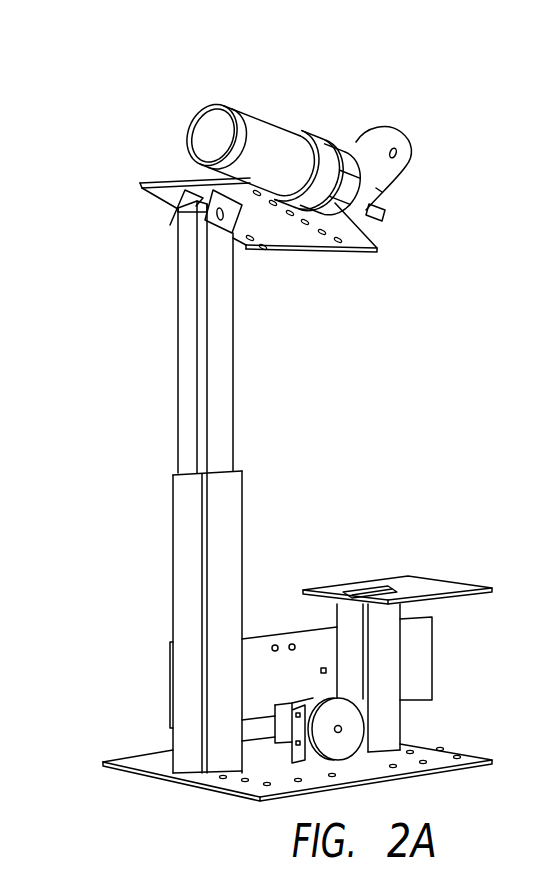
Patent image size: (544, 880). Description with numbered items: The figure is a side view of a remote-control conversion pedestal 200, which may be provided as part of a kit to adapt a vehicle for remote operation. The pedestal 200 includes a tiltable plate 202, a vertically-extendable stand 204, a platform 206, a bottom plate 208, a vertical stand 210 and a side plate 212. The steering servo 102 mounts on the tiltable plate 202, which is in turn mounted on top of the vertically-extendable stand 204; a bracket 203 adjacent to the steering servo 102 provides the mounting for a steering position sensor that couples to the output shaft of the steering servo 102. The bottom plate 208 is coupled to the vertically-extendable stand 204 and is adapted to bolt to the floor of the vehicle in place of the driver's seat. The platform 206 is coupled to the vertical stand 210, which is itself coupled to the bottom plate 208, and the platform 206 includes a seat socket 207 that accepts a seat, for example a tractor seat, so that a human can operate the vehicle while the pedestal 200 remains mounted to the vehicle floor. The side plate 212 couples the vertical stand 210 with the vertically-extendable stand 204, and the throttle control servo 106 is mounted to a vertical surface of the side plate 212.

The remote-control conversion pedestal 200 is at (233, 74).
The steering servo 102 is at (262, 118).
The bracket 203 is at (401, 131).
The tiltable plate 202 is at (343, 251).
The vertically-extendable stand 204 is at (243, 498).
The platform 206 is at (447, 582).
The seat socket 207 is at (373, 589).
The side plate 212 is at (433, 667).
The vertical stand 210 is at (401, 722).
The throttle control servo 106 is at (340, 753).
The bottom plate 208 is at (273, 800).